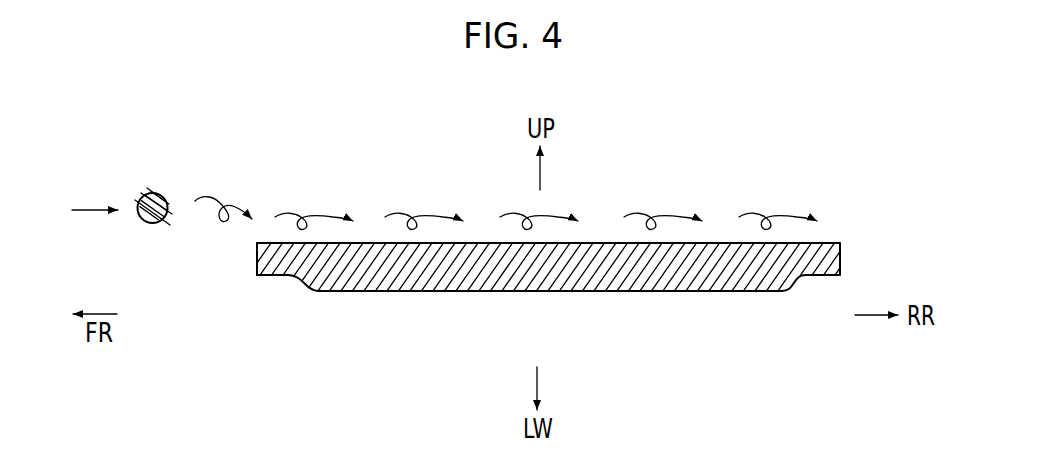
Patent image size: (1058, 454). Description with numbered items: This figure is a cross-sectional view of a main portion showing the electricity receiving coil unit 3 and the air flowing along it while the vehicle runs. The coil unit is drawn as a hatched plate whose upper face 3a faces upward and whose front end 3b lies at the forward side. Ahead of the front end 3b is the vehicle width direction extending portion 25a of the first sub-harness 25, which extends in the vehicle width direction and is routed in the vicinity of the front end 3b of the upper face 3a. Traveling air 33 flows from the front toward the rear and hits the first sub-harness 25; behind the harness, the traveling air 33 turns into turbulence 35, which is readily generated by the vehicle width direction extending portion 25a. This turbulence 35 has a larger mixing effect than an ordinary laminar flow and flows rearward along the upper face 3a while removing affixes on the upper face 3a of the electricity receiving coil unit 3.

The electricity receiving coil unit 3 is at (831, 241).
The upper face 3a is at (720, 243).
The front end 3b is at (257, 258).
The first sub-harness 25 is at (167, 176).
The vehicle width direction extending portion 25a is at (159, 193).
The traveling air 33 is at (97, 208).
The turbulence 35 is at (330, 216).